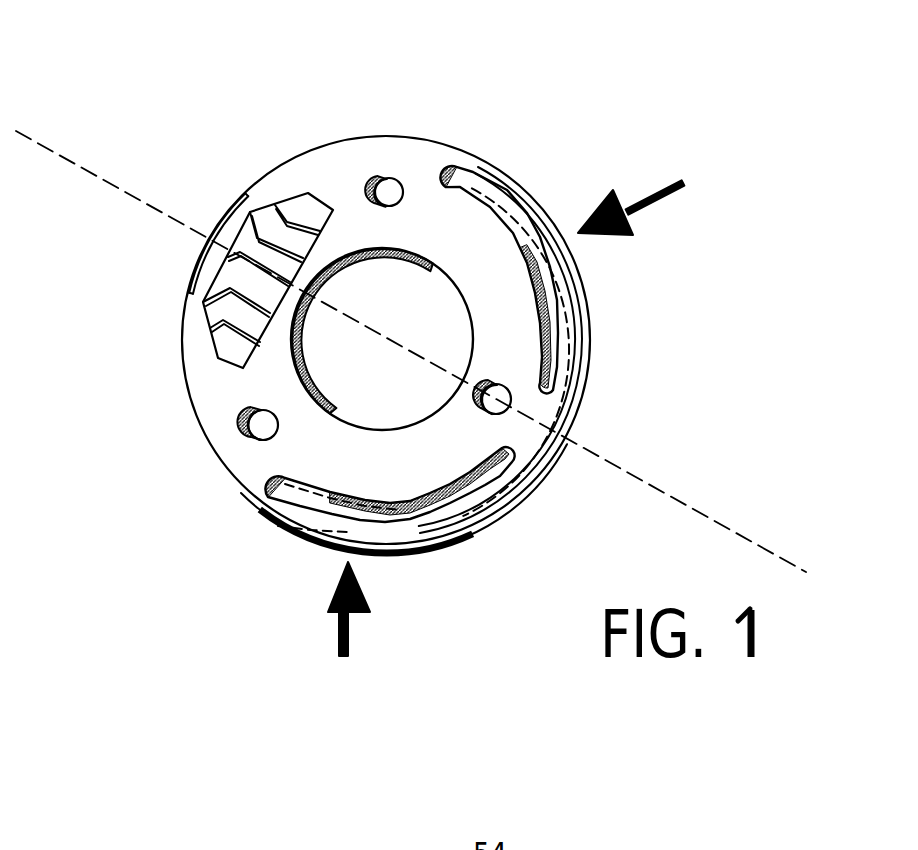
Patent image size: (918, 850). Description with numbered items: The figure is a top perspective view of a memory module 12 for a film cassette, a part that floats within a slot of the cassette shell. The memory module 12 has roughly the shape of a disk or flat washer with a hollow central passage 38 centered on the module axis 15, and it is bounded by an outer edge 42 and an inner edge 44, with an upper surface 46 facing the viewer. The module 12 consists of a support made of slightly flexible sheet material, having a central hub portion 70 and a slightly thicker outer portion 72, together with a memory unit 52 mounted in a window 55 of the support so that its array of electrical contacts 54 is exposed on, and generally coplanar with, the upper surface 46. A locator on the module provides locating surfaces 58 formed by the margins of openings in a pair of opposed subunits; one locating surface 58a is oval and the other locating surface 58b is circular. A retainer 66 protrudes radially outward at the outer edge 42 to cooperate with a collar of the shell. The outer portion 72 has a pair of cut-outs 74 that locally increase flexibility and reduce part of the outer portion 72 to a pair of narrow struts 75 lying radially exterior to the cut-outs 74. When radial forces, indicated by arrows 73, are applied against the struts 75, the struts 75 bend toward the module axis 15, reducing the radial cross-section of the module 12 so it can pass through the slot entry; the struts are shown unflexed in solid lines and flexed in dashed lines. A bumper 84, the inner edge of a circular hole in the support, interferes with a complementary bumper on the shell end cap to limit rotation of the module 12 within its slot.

The memory module 12 is at (684, 63).
The module axis 15 is at (46, 148).
The hollow central passage 38 is at (458, 341).
The outer edge 42 is at (487, 158).
The inner edge 44 is at (439, 262).
The upper surface 46 is at (333, 517).
The memory unit 52 is at (220, 229).
The electrical contacts 54 is at (185, 320).
The window 55 is at (229, 229).
The locating surfaces 58 is at (264, 256).
The oval locating surface 58a is at (235, 420).
The circular locating surface 58b is at (380, 168).
The retainer 66 is at (448, 549).
The central hub portion 70 is at (347, 443).
The outer portion 72 is at (470, 440).
The arrows 73 is at (633, 195).
The cut-outs 74 is at (272, 497).
The struts 75 is at (480, 527).
The bumper 84 is at (482, 410).